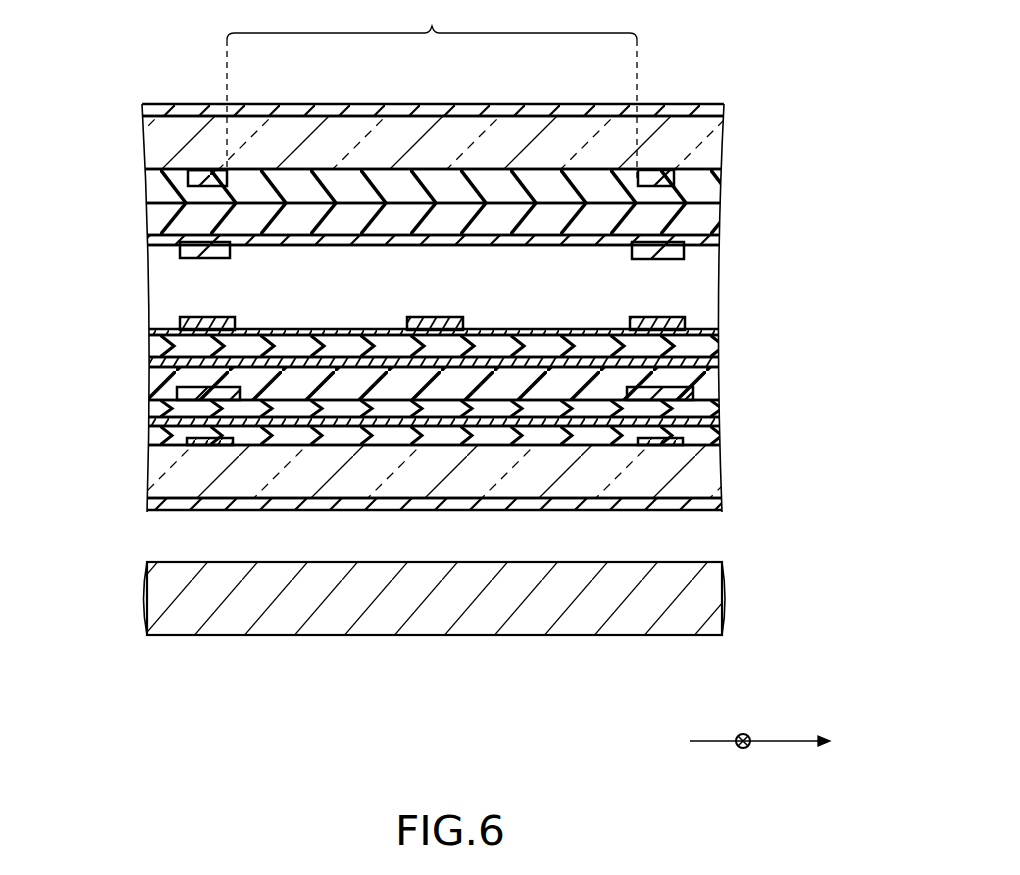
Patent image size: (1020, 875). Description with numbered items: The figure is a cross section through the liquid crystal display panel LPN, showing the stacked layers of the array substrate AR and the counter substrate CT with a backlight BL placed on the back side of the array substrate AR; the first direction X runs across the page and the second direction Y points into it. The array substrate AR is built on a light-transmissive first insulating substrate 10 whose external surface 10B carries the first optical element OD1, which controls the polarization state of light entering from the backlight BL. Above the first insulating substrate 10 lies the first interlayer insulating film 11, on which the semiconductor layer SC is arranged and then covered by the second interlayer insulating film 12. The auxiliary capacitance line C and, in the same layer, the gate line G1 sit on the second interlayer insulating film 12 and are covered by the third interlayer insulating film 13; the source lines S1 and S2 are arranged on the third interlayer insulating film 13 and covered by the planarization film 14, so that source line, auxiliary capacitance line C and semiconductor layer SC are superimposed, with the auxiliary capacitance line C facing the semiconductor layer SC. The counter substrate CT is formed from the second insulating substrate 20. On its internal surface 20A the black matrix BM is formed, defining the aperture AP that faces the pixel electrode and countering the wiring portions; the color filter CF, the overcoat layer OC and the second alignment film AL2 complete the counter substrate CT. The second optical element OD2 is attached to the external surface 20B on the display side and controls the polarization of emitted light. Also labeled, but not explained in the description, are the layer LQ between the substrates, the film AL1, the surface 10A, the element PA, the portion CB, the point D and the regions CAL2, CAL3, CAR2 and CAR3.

The second optical element OD2 is at (724, 110).
The second insulating substrate 20 is at (715, 128).
The external surface of the second insulating substrate 20B is at (194, 102).
The internal surface of the second insulating substrate 20A is at (185, 176).
The black matrix BM is at (690, 180).
The color filter CF is at (718, 206).
The overcoat layer OC is at (715, 240).
The second alignment film AL2 is at (685, 250).
The third left pixel electrode region (CA3) CAL3 is at (205, 259).
The third right pixel electrode region (CA3) CAR3 is at (668, 261).
The liquid crystal layer LQ is at (705, 298).
The second left electrode region (CA2) CAL2 is at (193, 318).
The second right electrode region (CA2) CAR2 is at (645, 318).
The pixel electrode (PE) PA is at (438, 318).
The first alignment film AL1 is at (712, 332).
The planarization film 14 is at (712, 347).
The third interlayer insulating film 13 is at (715, 363).
The second interlayer insulating film 12 is at (712, 395).
The inner surface of first substrate 10A is at (178, 395).
The gate line G1 is at (715, 427).
The first interlayer insulating film 11 is at (718, 442).
The source line S1 is at (205, 446).
The source line S2 is at (648, 446).
The semiconductor layer SC is at (212, 400).
The contact / bridge portion CB is at (436, 375).
The first insulating substrate 10 is at (708, 470).
The first optical element OD1 is at (700, 512).
The external surface of the first insulating substrate 10B is at (176, 518).
The backlight BL is at (708, 590).
The aperture AP is at (432, 91).
The liquid crystal display panel LPN is at (735, 76).
The counter substrate CT is at (140, 146).
The array substrate AR is at (140, 462).
The auxiliary capacitance line C is at (128, 504).
The point D is at (744, 504).
The first direction X is at (769, 740).
The second direction Y is at (742, 756).